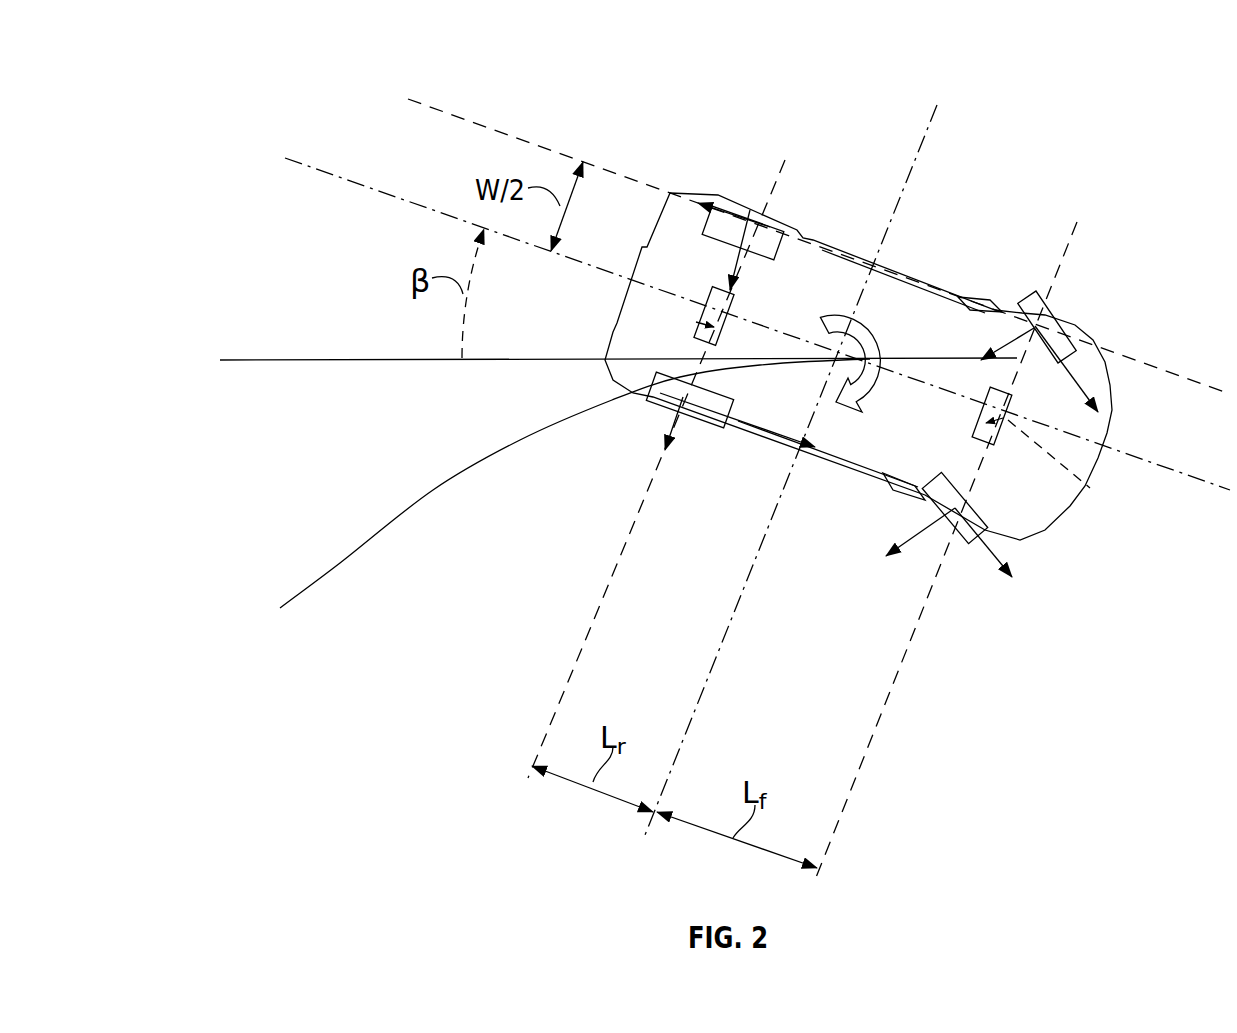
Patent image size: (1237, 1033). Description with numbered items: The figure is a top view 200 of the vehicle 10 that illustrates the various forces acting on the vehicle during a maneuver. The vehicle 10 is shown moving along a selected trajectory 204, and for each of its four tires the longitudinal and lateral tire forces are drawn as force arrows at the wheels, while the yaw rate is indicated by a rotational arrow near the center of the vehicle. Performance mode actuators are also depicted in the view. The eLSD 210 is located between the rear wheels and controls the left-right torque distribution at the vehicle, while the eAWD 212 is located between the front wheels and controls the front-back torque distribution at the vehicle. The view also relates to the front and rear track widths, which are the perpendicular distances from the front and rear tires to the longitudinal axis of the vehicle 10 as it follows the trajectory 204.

The top view 200 is at (258, 64).
The eLSD 210 is at (873, 348).
The eAWD 212 is at (1090, 488).
The vehicle 10 is at (1083, 427).
The selected trajectory 204 is at (336, 560).